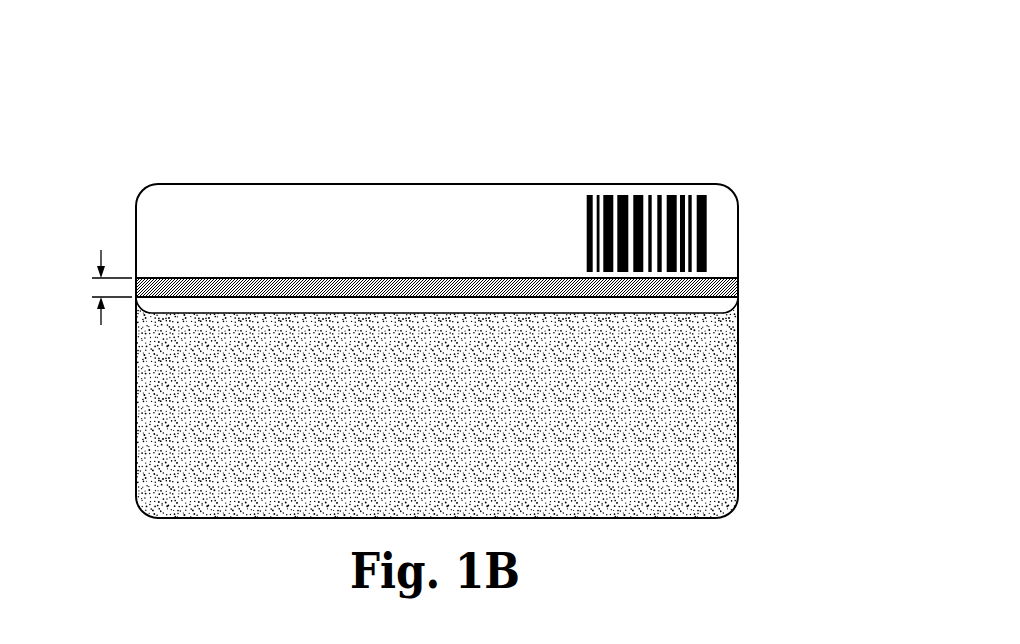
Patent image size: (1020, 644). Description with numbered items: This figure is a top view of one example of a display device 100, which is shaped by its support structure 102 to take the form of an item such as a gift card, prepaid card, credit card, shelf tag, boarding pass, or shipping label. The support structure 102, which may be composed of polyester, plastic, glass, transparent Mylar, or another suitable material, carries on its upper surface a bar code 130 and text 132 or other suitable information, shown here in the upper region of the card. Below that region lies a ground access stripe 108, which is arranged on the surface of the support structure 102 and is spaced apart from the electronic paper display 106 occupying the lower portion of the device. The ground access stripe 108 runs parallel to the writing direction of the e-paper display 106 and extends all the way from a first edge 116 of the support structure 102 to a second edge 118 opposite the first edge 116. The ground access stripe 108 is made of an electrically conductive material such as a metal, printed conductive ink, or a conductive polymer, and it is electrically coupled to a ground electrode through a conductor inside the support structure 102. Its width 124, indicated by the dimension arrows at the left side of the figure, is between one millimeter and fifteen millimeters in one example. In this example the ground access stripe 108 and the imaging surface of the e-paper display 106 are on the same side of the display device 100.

The display device 100 is at (627, 113).
The support structure 102 is at (343, 197).
The electronic paper display 106 is at (723, 428).
The ground access stripe 108 is at (735, 287).
The first edge 116 is at (136, 220).
The second edge 118 is at (738, 225).
The width 124 is at (110, 301).
The bar code 130 is at (706, 217).
The text 132 is at (535, 213).